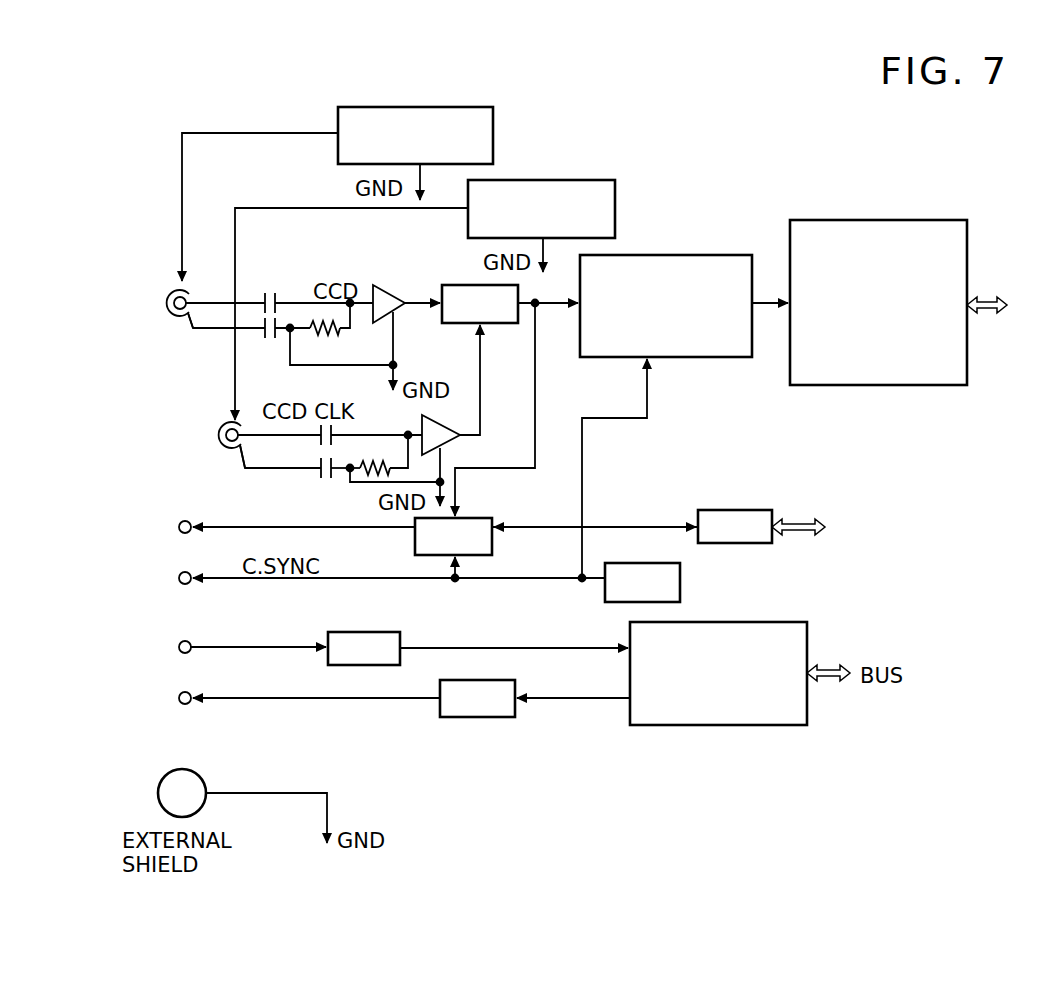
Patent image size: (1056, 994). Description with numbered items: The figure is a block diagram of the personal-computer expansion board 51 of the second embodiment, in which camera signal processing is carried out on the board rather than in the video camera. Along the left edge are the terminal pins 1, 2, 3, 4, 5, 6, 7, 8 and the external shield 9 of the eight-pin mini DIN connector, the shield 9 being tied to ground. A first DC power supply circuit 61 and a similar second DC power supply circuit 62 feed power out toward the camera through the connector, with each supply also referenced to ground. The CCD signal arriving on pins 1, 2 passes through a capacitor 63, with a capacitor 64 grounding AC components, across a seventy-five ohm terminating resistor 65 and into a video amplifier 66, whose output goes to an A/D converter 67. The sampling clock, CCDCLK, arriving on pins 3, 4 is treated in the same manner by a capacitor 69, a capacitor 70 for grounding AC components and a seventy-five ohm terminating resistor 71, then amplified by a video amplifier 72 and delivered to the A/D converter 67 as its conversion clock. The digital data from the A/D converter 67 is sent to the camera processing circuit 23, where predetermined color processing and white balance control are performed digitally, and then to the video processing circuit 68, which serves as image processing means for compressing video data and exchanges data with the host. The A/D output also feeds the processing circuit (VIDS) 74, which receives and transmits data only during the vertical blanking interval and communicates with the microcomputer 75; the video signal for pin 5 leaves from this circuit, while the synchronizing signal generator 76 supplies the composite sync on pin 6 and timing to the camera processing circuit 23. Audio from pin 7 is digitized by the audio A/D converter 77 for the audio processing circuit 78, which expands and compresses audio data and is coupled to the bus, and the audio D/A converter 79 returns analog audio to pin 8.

The expansion board 51 is at (684, 83).
The first DC power supply circuit 61 is at (410, 107).
The second DC power supply circuit 62 is at (545, 180).
The terminal pin 1 is at (167, 301).
The terminal pin 2 is at (175, 317).
The terminal pin 3 is at (220, 450).
The terminal pin 4 is at (216, 425).
The terminal pin 5 is at (178, 527).
The terminal pin 6 is at (178, 578).
The terminal pin 7 is at (178, 647).
The terminal pin 8 is at (178, 698).
The external shield 9 is at (158, 793).
The camera processing circuit 23 is at (668, 255).
The capacitor 63 is at (269, 292).
The capacitor 64 is at (268, 340).
The 75Ω-terminating resistor 65 is at (318, 320).
The video amplifier 66 is at (378, 292).
The A/D converter 67 is at (450, 285).
The video processing circuit 68 is at (837, 220).
The capacitor 69 is at (315, 448).
The capacitor 70 is at (325, 480).
The 75Ω-terminating resistor 71 is at (368, 476).
The video amplifier 72 is at (455, 440).
The processing circuit (VIDS) 74 is at (492, 541).
The microcomputer 75 is at (765, 543).
The synchronizing signal generator 76 is at (680, 578).
The audio A/D converter 77 is at (400, 640).
The audio processing circuit 78 is at (630, 630).
The audio D/A converter 79 is at (515, 686).